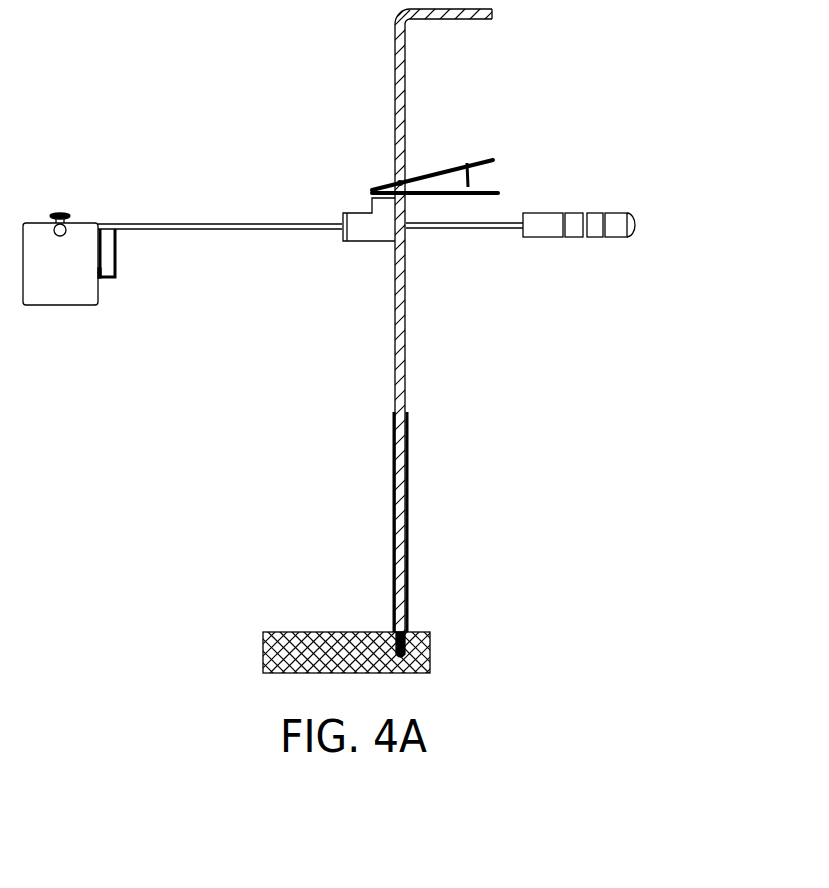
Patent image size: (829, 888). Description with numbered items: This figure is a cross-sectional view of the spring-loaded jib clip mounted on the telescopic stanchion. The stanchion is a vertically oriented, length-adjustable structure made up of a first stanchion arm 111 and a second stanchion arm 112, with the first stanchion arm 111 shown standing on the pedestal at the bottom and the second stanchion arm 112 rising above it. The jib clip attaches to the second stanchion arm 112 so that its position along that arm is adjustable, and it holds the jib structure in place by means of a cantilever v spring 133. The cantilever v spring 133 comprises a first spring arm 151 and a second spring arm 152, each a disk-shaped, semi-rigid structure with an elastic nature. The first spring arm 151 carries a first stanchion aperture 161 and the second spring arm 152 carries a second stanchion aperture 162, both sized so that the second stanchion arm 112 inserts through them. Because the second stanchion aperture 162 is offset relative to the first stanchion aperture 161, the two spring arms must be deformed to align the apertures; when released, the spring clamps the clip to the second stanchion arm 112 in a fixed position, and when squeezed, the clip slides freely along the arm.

The first stanchion arm 111 is at (408, 467).
The second stanchion arm 112 is at (406, 333).
The cantilever v spring 133 is at (503, 130).
The first spring arm 151 is at (494, 158).
The second spring arm 152 is at (498, 193).
The first stanchion aperture 161 is at (405, 180).
The second stanchion aperture 162 is at (407, 197).